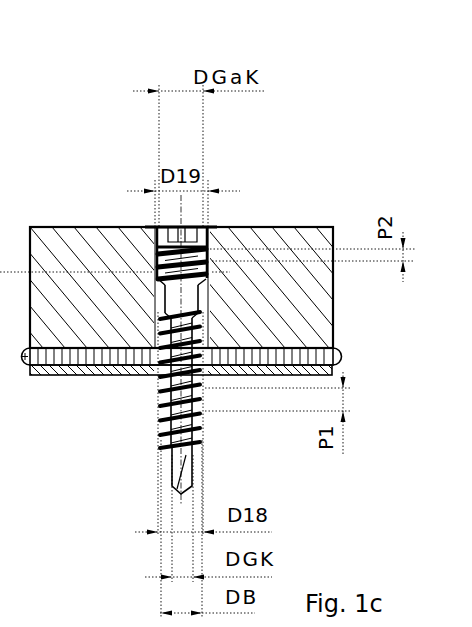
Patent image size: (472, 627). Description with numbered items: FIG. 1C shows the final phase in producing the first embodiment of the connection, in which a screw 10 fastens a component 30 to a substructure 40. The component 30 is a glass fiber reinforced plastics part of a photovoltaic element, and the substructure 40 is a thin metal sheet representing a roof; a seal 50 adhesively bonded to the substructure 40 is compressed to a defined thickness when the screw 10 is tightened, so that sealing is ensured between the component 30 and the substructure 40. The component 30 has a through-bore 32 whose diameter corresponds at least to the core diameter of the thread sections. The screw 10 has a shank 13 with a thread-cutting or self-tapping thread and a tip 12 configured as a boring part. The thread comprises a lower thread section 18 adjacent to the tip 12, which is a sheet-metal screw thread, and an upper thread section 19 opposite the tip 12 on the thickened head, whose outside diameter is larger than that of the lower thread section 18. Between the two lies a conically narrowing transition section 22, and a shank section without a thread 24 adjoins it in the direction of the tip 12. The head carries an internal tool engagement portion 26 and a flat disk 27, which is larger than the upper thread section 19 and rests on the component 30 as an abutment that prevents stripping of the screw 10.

The screw 10 is at (152, 236).
The tip 12 is at (172, 467).
The shank 13 is at (160, 409).
The lower thread section 18 is at (205, 431).
The upper thread section 19 is at (150, 229).
The transition section 22 is at (190, 283).
The shank section without a thread 24 is at (200, 302).
The tool engagement portion 26 is at (162, 226).
The flat disk 27 is at (209, 226).
The component 30 is at (272, 235).
The through-bore 32 is at (200, 320).
The substructure 40 is at (334, 372).
The seal 50 is at (340, 356).